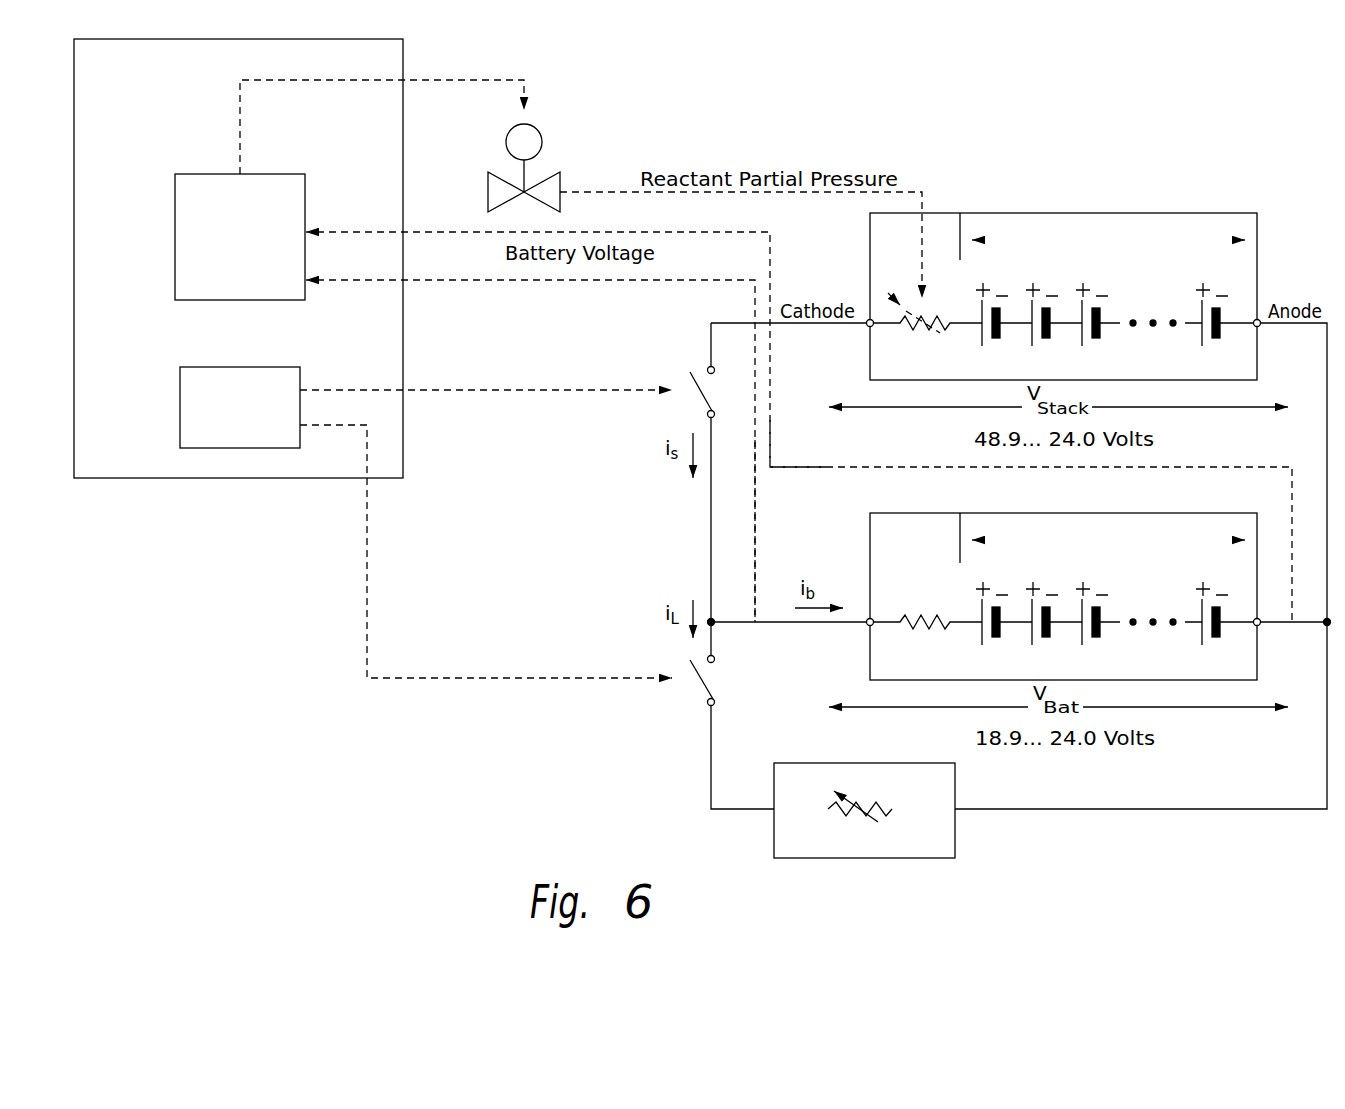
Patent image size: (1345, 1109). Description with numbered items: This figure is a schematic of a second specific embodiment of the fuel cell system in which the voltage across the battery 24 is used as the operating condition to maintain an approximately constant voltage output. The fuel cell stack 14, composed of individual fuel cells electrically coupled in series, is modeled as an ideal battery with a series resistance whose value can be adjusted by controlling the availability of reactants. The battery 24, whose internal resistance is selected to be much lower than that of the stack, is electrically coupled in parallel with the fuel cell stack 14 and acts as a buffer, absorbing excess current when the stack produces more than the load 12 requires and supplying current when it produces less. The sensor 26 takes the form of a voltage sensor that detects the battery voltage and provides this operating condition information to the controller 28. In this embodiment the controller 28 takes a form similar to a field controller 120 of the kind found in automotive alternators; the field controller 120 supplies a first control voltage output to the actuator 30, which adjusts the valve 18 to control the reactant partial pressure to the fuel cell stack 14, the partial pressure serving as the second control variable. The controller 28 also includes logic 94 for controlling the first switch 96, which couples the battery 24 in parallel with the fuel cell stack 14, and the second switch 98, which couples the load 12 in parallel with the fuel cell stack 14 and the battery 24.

The controller 28 is at (404, 56).
The field controller 120 is at (175, 232).
The logic 94 is at (180, 405).
The actuator 30 is at (506, 142).
The valve 18 is at (488, 192).
The fuel cell stack 14 is at (1222, 213).
The battery 24 is at (1222, 513).
The sensor 26 is at (810, 468).
The first switch 96 is at (698, 395).
The second switch 98 is at (698, 683).
The load 12 is at (957, 832).